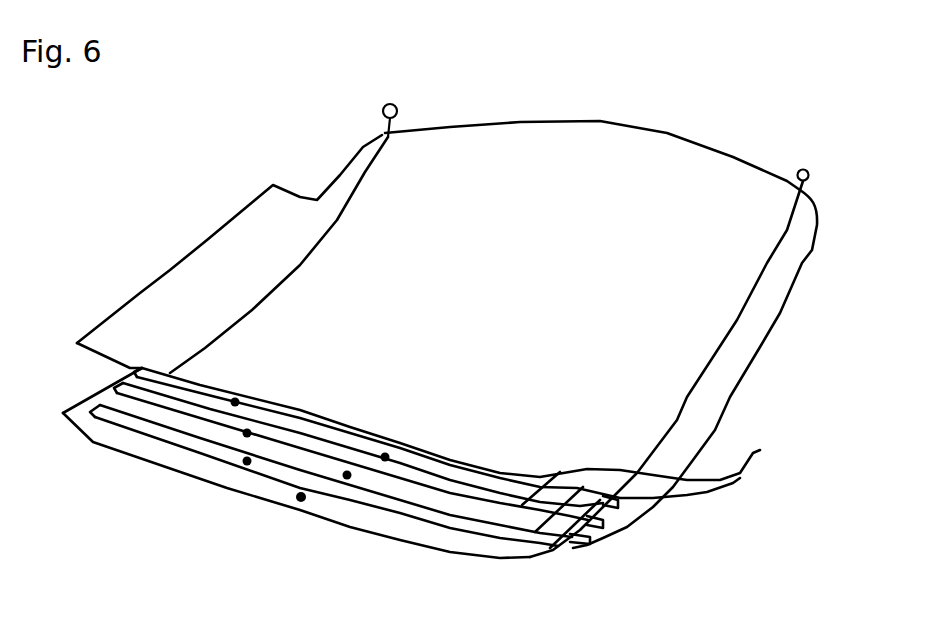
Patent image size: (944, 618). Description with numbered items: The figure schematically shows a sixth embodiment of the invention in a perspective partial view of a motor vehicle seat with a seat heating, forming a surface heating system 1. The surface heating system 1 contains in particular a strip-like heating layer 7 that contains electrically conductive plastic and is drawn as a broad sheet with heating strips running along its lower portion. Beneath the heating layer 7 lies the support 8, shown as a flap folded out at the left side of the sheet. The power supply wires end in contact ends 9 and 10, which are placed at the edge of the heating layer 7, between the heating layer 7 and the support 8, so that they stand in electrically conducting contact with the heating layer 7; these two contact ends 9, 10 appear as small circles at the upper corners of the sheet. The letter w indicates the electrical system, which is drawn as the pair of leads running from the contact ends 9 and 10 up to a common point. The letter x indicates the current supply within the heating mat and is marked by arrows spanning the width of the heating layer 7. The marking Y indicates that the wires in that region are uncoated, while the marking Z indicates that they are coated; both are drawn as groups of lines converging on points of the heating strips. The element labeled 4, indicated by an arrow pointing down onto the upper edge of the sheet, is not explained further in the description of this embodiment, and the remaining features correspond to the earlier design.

The surface heating system 1 is at (818, 419).
The transparent cover layer 4 is at (293, 146).
The heating layer 7 is at (760, 450).
The support 8 is at (167, 268).
The contact end 9 is at (400, 115).
The contact end 10 is at (809, 178).
The electrical system w is at (797, 170).
The current supply within the heating mat x is at (318, 257).
The uncoated wires Y is at (247, 462).
The coated wires Z is at (385, 457).